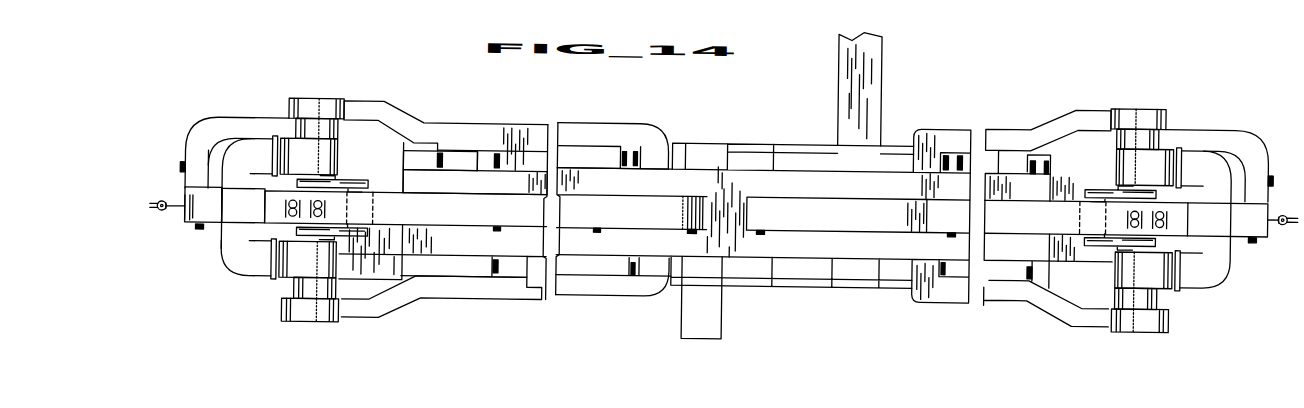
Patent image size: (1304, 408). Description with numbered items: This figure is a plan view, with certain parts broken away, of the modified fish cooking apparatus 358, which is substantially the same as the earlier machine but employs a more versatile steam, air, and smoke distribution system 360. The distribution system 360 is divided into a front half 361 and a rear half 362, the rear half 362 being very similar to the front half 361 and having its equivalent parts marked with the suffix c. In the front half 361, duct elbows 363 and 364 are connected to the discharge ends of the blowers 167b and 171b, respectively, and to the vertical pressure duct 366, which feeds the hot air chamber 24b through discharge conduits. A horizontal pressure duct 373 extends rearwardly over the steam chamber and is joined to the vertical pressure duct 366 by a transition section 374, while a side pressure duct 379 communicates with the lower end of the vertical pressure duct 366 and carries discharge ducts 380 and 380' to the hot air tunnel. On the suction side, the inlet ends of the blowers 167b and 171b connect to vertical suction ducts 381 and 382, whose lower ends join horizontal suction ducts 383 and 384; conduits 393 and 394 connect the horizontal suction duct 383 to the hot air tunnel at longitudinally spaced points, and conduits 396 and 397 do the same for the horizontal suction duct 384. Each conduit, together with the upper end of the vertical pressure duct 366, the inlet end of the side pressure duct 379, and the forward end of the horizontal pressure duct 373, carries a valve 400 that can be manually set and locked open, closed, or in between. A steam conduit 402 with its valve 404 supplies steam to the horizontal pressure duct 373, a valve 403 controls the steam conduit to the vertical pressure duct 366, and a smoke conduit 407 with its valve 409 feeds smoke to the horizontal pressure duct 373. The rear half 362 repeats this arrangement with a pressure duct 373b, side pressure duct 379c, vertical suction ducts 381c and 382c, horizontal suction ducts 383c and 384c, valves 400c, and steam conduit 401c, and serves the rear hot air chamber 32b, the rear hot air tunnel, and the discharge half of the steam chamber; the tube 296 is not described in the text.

The hot air chamber 24b is at (367, 160).
The hot air chamber 32b is at (1077, 150).
The blower 167b is at (320, 159).
The blower 171b is at (320, 260).
The frame tube 296 is at (807, 262).
The modified fish cooking apparatus 358 is at (1003, 106).
The steam, air, and smoke distribution system 360 is at (782, 190).
The front half 361 is at (452, 187).
The rear half 362 is at (914, 191).
The duct elbow 363 is at (262, 160).
The duct elbow 364 is at (262, 259).
The vertical pressure duct 366 is at (186, 215).
The horizontal pressure duct 373 is at (478, 212).
The horizontal pressure duct 373b is at (850, 213).
The transition section 374 is at (228, 208).
The side pressure duct 379 is at (250, 122).
The side pressure duct 379c is at (1210, 125).
The discharge duct 380 is at (440, 159).
The discharge duct 380' is at (613, 146).
The vertical suction duct 381 is at (308, 106).
The vertical suction duct 381c is at (1137, 106).
The vertical suction duct 382 is at (292, 312).
The vertical suction duct 382c is at (1120, 318).
The horizontal suction duct 383 is at (492, 127).
The horizontal suction duct 383c is at (912, 128).
The horizontal suction duct 384 is at (463, 287).
The horizontal suction duct 384c is at (990, 292).
The conduit 393 is at (512, 157).
The conduit 394 is at (663, 158).
The conduit 396 is at (510, 262).
The conduit 397 is at (650, 267).
The valve 400 is at (180, 165).
The valve 400c is at (950, 227).
The steam conduit 401c is at (1262, 212).
The steam conduit 402 is at (160, 200).
The valve 403 is at (164, 209).
The valve 404 is at (286, 208).
The conduit 407 is at (366, 195).
The valve 409 is at (350, 207).